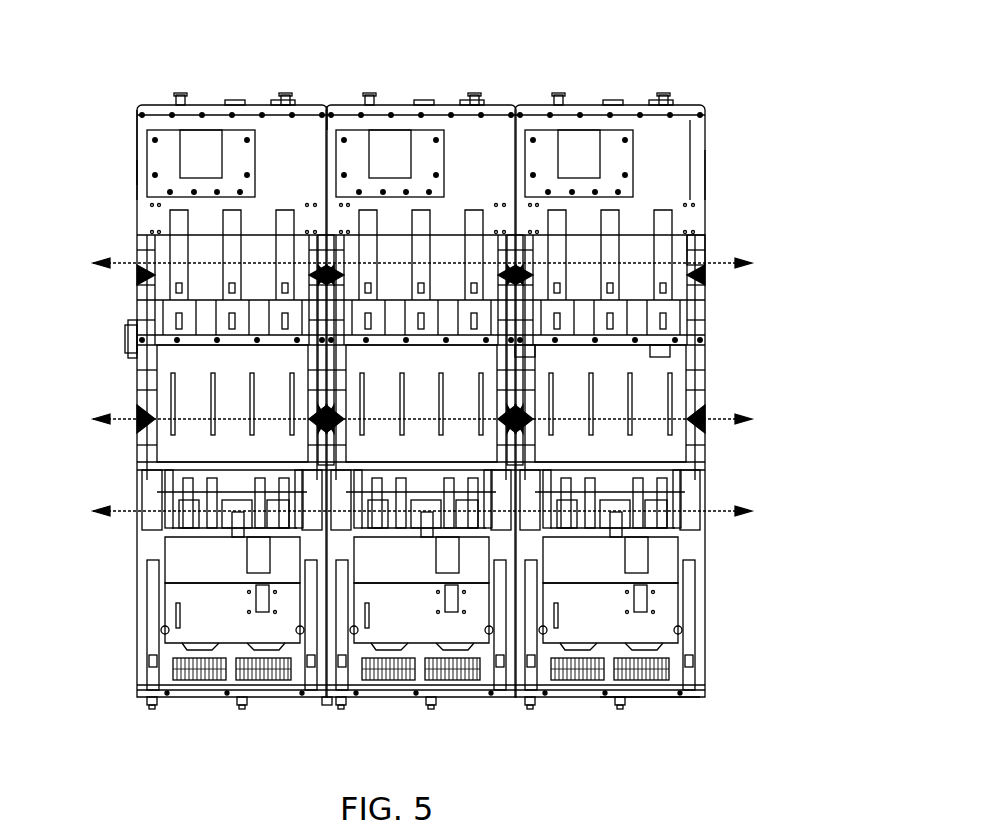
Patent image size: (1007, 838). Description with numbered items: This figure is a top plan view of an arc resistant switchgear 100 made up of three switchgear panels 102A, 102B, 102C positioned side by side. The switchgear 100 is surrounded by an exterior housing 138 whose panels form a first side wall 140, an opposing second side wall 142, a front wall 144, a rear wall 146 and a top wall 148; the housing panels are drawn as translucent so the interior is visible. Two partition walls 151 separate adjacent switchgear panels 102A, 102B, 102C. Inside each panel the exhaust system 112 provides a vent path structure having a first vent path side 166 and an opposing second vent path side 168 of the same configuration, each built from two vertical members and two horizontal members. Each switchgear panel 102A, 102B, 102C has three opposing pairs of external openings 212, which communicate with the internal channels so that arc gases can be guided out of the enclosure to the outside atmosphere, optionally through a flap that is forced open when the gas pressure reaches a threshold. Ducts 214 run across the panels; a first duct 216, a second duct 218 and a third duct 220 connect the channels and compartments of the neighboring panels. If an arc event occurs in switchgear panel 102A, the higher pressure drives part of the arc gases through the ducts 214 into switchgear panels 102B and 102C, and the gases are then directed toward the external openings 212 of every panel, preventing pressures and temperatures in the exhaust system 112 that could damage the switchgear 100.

The arc resistant switchgear 100 is at (125, 37).
The first switchgear panel 102A is at (208, 88).
The second switchgear panel 102B is at (408, 88).
The third switchgear panel 102C is at (594, 88).
The exhaust system 112 is at (132, 382).
The exterior housing 138 is at (137, 106).
The first side wall 140 is at (708, 176).
The second side wall 142 is at (136, 172).
The front wall 144 is at (642, 700).
The rear wall 146 is at (340, 104).
The top wall 148 is at (692, 140).
The partition wall 151 is at (335, 700).
The first vent path side 166 is at (662, 348).
The second vent path side 168 is at (537, 356).
The external openings 212 is at (528, 232).
The ducts 214 is at (132, 281).
The first duct 216 is at (728, 497).
The second duct 218 is at (708, 404).
The third duct 220 is at (700, 245).